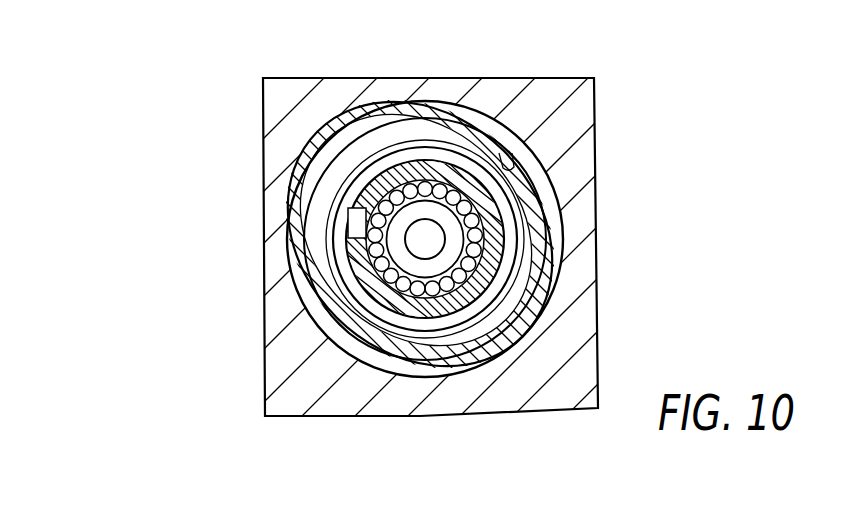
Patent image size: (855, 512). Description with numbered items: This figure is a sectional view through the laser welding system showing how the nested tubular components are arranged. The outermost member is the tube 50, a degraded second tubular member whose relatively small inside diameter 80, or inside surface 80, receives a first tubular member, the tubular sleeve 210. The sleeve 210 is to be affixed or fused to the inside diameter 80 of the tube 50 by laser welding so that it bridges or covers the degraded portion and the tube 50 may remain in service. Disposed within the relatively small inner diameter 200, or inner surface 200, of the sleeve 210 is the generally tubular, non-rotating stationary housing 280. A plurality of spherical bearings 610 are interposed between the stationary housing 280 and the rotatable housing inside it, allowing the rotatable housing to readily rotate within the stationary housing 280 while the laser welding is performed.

The tube 50 is at (545, 284).
The inside diameter 80 is at (506, 166).
The inner diameter 200 is at (345, 248).
The tubular sleeve 210 is at (418, 352).
The stationary housing 280 is at (495, 225).
The spherical bearings 610 is at (430, 183).